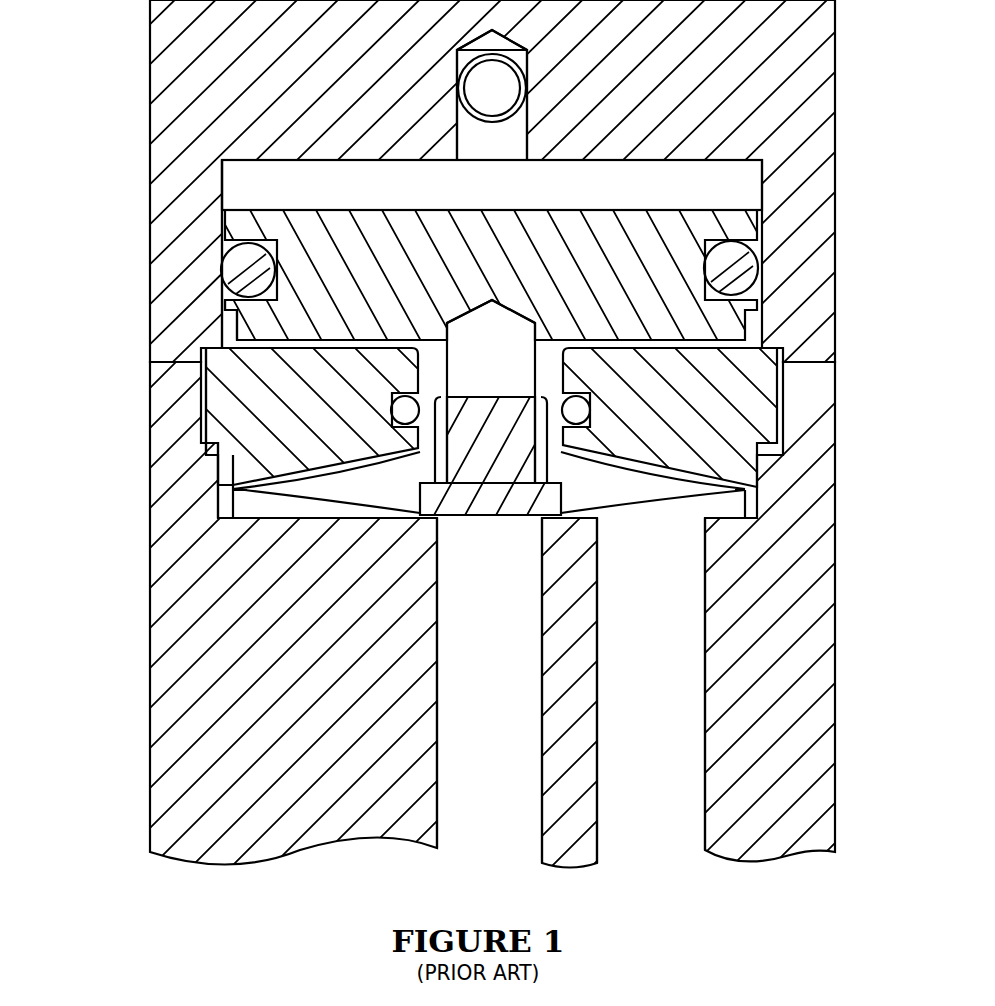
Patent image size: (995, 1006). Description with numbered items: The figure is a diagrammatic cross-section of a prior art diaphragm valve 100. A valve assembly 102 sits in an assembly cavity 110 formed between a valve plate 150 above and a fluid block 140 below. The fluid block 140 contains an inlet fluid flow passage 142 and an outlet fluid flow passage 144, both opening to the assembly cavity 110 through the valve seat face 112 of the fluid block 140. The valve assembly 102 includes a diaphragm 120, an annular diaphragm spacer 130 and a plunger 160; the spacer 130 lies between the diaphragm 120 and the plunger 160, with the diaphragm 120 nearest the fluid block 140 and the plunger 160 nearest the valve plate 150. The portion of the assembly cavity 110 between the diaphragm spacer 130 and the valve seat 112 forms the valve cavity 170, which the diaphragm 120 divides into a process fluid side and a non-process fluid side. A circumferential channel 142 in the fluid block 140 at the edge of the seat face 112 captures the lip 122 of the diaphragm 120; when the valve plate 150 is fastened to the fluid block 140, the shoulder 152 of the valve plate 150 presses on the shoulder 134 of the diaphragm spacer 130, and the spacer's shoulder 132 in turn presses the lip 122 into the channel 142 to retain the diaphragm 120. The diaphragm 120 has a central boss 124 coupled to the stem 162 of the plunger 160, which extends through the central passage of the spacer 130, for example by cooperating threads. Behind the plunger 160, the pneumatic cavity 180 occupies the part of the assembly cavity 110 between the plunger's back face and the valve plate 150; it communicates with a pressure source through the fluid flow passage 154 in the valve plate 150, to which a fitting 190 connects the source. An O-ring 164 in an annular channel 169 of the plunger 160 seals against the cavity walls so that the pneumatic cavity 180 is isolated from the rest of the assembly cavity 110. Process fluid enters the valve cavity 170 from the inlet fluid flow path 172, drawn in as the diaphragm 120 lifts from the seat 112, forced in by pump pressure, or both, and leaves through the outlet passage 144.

The valve 100 is at (150, 734).
The valve assembly 102 is at (221, 291).
The assembly cavity 110 is at (190, 356).
The valve seat face 112 is at (240, 625).
The diaphragm 120 is at (418, 513).
The lip 122 is at (222, 503).
The boss 124 is at (467, 470).
The diaphragm spacer 130 is at (735, 397).
The shoulder 132 is at (228, 468).
The shoulder 134 is at (205, 396).
The fluid block 140 is at (753, 723).
The circumferential channel 142 is at (222, 528).
The outlet fluid flow passage 144 is at (490, 652).
The valve plate 150 is at (792, 251).
The shoulder 152 is at (240, 347).
The fluid flow passage 154 is at (488, 83).
The plunger 160 is at (660, 340).
The stem 162 is at (552, 443).
The O-ring 164 is at (235, 262).
The annular channel 169 is at (225, 310).
The valve cavity 170 is at (653, 507).
The inlet fluid flow path 172 is at (648, 622).
The pneumatic cavity 180 is at (253, 183).
The fitting 190 is at (535, 110).